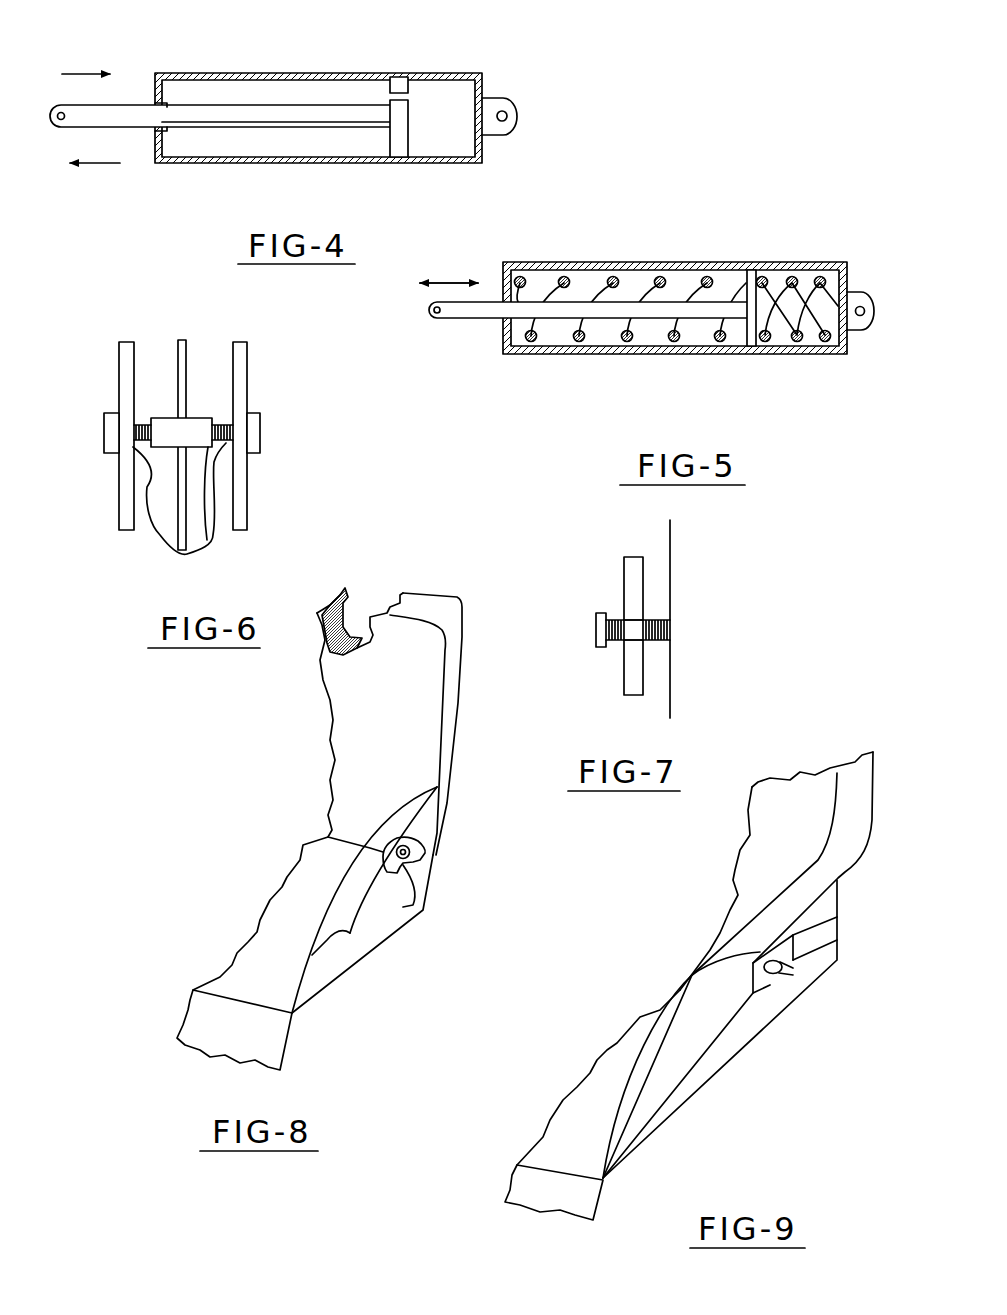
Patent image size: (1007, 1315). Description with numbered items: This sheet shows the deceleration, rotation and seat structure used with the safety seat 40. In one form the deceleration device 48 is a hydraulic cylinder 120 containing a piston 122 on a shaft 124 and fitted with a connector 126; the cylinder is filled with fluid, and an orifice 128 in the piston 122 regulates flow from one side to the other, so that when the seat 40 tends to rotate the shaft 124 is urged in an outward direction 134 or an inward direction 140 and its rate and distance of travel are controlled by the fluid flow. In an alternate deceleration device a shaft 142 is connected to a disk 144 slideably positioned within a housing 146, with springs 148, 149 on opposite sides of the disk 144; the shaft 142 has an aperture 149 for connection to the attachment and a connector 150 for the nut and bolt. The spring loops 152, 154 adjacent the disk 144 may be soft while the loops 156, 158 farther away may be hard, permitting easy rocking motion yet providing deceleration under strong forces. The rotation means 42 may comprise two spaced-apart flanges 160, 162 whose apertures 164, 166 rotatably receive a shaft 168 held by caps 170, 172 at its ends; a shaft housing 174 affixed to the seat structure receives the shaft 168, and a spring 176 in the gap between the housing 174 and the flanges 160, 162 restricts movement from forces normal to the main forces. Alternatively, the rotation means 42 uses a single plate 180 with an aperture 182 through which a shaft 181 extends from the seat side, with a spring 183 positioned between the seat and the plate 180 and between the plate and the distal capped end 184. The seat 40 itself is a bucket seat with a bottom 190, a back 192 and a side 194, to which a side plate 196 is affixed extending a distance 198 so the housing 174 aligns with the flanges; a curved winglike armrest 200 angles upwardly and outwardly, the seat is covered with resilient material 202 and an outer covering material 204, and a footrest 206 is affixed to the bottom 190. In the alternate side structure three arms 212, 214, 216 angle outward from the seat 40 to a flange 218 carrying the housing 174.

In FIG. 8, the seat 40 is at (338, 821).
In FIG. 9, the seat 40 is at (689, 1002).
In FIG. 6, the rotation means 42 is at (177, 440).
In FIG. 4, the deceleration device 48 is at (306, 108).
In FIG. 5, the deceleration device 48 is at (646, 295).
In FIG. 4, the hydraulic cylinder 120 is at (229, 164).
In FIG. 4, the piston 122 is at (402, 145).
In FIG. 4, the shaft 124 is at (103, 123).
In FIG. 4, the connector 126 is at (508, 103).
In FIG. 4, the orifice 128 is at (390, 89).
In FIG. 4, the outward direction 134 is at (100, 166).
In FIG. 4, the inward direction 140 is at (86, 74).
In FIG. 5, the shaft 142 is at (455, 320).
In FIG. 5, the disk 144 is at (746, 270).
In FIG. 5, the housing 146 is at (597, 348).
In FIG. 5, the spring 148 is at (553, 279).
In FIG. 5, the spring / aperture 149 is at (772, 278).
In FIG. 5, the connector 150 is at (860, 293).
In FIG. 5, the spring loops 152 is at (675, 338).
In FIG. 5, the spring loops 154 is at (753, 348).
In FIG. 5, the spring loops 156 is at (533, 340).
In FIG. 5, the spring loops 158 is at (820, 342).
In FIG. 6, the flange 160 is at (248, 361).
In FIG. 6, the flange 162 is at (126, 371).
In FIG. 6, the aperture 164 is at (130, 448).
In FIG. 6, the aperture 166 is at (249, 470).
In FIG. 6, the shaft 168 is at (220, 423).
In FIG. 6, the cap 170 is at (262, 436).
In FIG. 6, the cap 172 is at (105, 433).
In FIG. 6, the shaft housing 174 is at (206, 537).
In FIG. 8, the shaft housing 174 is at (413, 905).
In FIG. 9, the shaft housing 174 is at (793, 970).
In FIG. 6, the spring 176 is at (179, 511).
In FIG. 7, the plate 180 is at (624, 588).
In FIG. 7, the shaft 181 is at (656, 622).
In FIG. 7, the aperture 182 is at (630, 664).
In FIG. 7, the spring 183 is at (617, 640).
In FIG. 7, the capped end 184 is at (596, 628).
In FIG. 8, the bottom 190 is at (276, 923).
In FIG. 9, the bottom 190 is at (557, 1152).
In FIG. 8, the back 192 is at (360, 722).
In FIG. 9, the back 192 is at (773, 820).
In FIG. 8, the side 194 is at (423, 867).
In FIG. 9, the side 194 is at (820, 902).
In FIG. 6, the side plate 196 is at (184, 343).
In FIG. 8, the side plate 196 is at (366, 920).
In FIG. 9, the side plate 196 is at (681, 1065).
In FIG. 8, the distance 198 is at (316, 948).
In FIG. 8, the armrest 200 is at (443, 789).
In FIG. 9, the armrest 200 is at (843, 853).
In FIG. 8, the resilient material 202 is at (414, 583).
In FIG. 8, the covering material 204 is at (322, 611).
In FIG. 8, the footrest 206 is at (234, 1030).
In FIG. 9, the footrest 206 is at (538, 1203).
In FIG. 9, the arm 212 is at (688, 1080).
In FIG. 9, the arm 214 is at (798, 982).
In FIG. 9, the arm 216 is at (817, 942).
In FIG. 9, the flange 218 is at (763, 993).